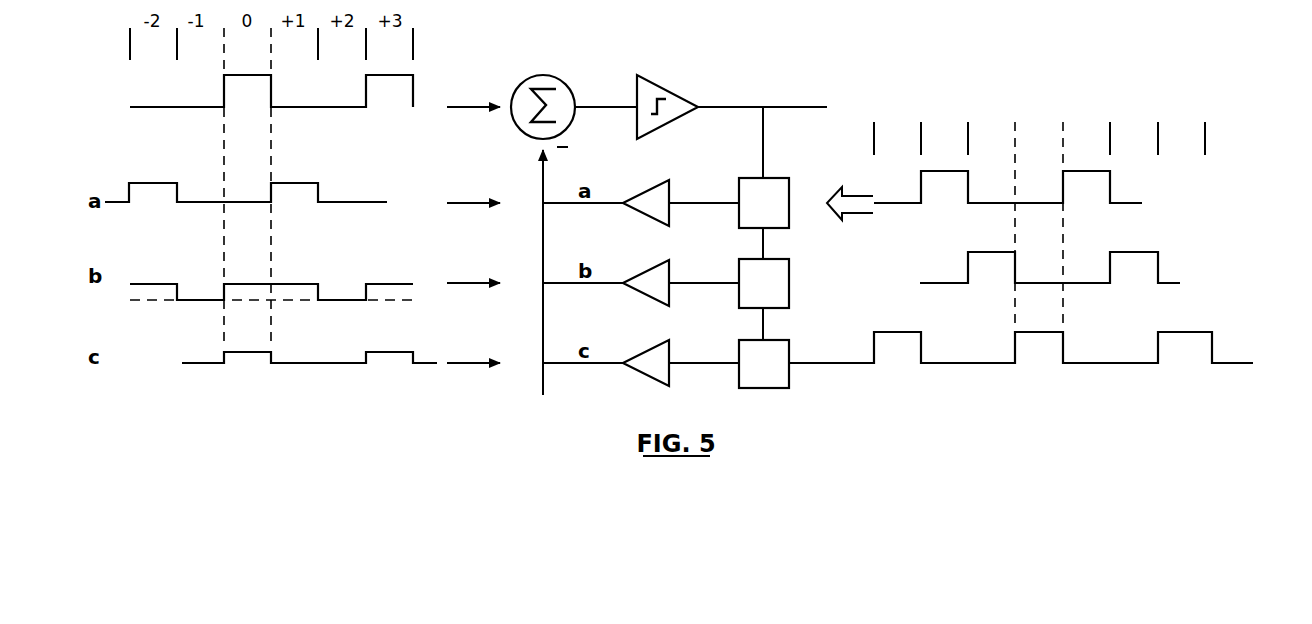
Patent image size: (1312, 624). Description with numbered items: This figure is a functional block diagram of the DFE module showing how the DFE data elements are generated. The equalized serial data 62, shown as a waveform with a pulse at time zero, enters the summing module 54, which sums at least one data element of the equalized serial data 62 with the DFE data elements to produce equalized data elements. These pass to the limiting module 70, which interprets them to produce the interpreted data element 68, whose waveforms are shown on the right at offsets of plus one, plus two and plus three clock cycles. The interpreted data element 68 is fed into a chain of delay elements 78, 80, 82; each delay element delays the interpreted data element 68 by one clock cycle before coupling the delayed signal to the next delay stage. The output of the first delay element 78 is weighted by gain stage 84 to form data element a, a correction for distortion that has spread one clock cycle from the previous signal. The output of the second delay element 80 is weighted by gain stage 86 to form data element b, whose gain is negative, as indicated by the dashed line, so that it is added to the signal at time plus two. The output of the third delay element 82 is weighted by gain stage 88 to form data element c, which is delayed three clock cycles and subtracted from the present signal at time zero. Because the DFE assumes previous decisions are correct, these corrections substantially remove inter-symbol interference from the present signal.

The equalized serial data 62 is at (122, 92).
The summing module 54 is at (556, 75).
The limiting module 70 is at (652, 76).
The interpreted data element 68 is at (763, 98).
The delay element 78 is at (778, 178).
The delay element 80 is at (778, 259).
The delay element 82 is at (778, 340).
The gain stage 84 is at (652, 181).
The gain stage 86 is at (652, 261).
The gain stage 88 is at (652, 341).